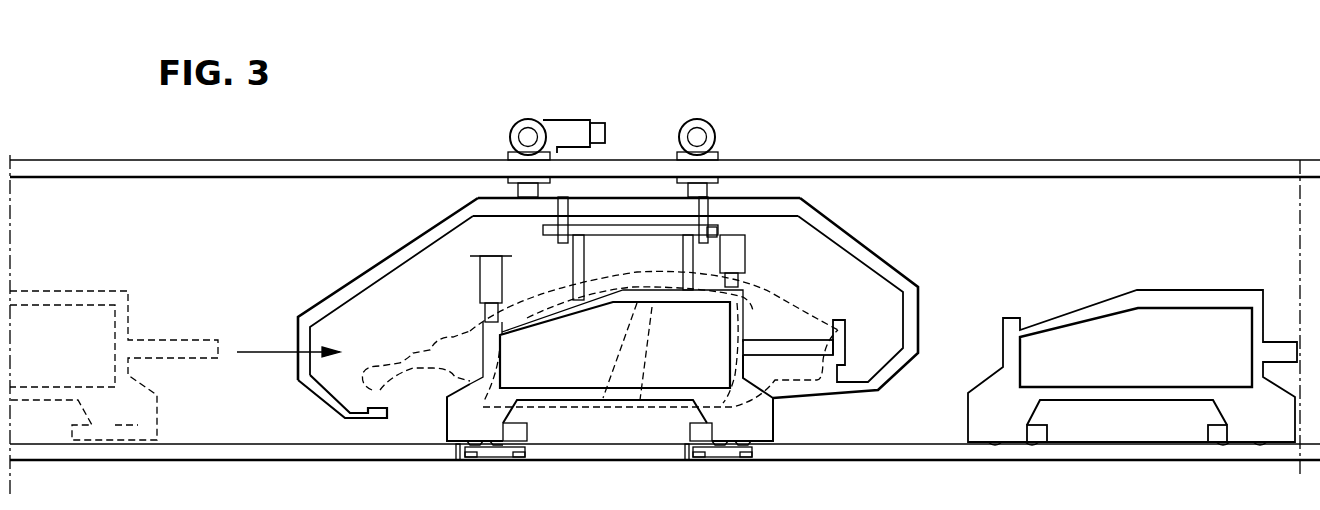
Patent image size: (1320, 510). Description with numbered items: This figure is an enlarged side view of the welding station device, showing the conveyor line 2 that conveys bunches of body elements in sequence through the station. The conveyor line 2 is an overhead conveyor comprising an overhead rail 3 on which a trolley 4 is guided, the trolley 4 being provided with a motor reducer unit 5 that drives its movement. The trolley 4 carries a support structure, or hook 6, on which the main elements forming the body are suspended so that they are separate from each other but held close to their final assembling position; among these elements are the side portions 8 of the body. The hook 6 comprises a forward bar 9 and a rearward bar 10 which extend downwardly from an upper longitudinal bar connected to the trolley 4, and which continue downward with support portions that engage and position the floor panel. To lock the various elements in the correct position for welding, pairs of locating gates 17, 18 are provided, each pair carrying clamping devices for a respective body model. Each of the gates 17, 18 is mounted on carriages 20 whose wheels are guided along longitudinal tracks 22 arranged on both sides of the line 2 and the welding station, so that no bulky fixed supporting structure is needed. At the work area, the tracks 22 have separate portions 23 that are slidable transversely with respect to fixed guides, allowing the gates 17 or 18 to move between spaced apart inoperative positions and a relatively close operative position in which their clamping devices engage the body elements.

The conveyor line 2 is at (812, 139).
The overhead rail 3 is at (915, 161).
The trolley 4 is at (688, 190).
The motor reducer unit 5 is at (548, 121).
The hook 6 is at (848, 233).
The side portions 8 is at (768, 308).
The forward bar 9 is at (348, 291).
The rearward bar 10 is at (898, 278).
The locating gates 17 is at (78, 292).
The locating gates 18 is at (1057, 318).
The carriages 20 is at (512, 452).
The longitudinal tracks 22 is at (246, 452).
The separate portions 23 is at (483, 452).